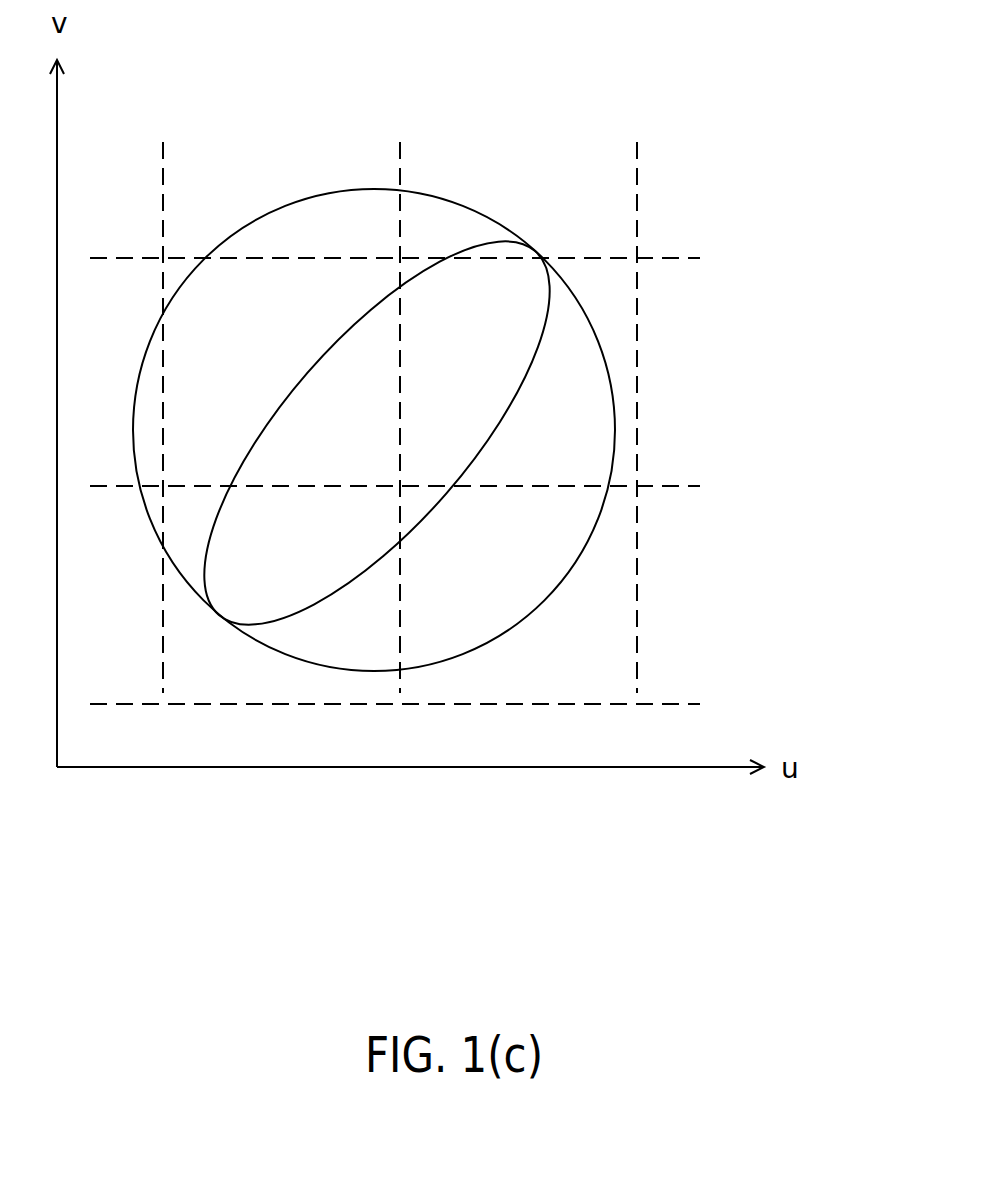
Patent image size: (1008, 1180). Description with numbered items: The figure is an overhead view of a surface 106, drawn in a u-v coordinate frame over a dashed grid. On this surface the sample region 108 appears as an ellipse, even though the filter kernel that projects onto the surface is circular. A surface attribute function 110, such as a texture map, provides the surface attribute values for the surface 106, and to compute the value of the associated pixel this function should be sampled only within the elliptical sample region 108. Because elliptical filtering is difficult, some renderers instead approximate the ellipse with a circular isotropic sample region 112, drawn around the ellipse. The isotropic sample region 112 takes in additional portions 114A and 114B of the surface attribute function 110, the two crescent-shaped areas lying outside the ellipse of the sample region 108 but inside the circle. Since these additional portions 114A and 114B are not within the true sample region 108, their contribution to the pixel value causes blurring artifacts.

The surface 106 is at (694, 192).
The sample region 108 is at (477, 450).
The surface attribute function 110 is at (637, 387).
The isotropic sample region 112 is at (354, 222).
The additional portion 114A is at (303, 341).
The additional portion 114B is at (518, 581).